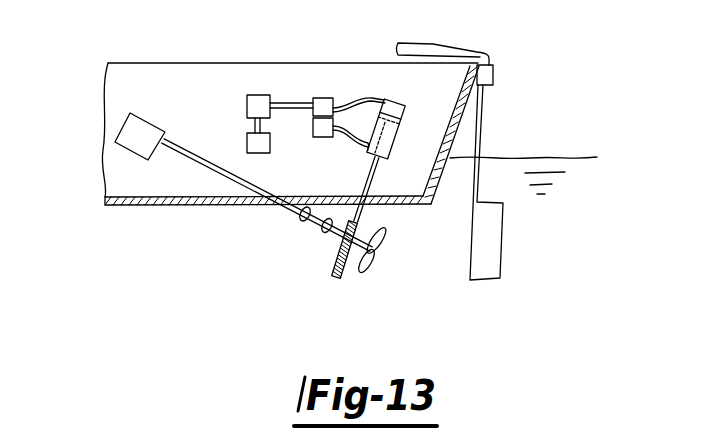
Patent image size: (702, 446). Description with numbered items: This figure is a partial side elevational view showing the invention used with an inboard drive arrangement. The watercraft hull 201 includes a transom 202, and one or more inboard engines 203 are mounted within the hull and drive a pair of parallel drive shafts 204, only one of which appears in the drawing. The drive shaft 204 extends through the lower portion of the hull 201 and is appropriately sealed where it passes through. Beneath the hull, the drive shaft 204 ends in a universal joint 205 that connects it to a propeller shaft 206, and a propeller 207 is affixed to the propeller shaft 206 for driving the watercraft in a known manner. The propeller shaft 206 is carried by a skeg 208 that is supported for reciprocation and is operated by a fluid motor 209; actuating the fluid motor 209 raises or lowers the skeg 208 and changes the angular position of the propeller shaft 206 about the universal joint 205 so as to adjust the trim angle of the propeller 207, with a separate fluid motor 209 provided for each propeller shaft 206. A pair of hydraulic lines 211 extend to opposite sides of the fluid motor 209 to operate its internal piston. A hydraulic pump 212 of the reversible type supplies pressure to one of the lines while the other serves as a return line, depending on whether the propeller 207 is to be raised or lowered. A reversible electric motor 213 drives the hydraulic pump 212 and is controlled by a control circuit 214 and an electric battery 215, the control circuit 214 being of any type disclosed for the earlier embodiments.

The watercraft hull 201 is at (148, 63).
The transom 202 is at (484, 113).
The inboard engine 203 is at (132, 144).
The drive shaft 204 is at (197, 168).
The universal joint 205 is at (315, 228).
The propeller shaft 206 is at (358, 252).
The propeller 207 is at (374, 268).
The skeg 208 is at (338, 258).
The fluid motor 209 is at (413, 110).
The hydraulic lines 211 is at (373, 100).
The hydraulic pump 212 is at (313, 137).
The reversible electric motor 213 is at (323, 103).
The control circuit 214 is at (250, 103).
The electric battery 215 is at (250, 143).